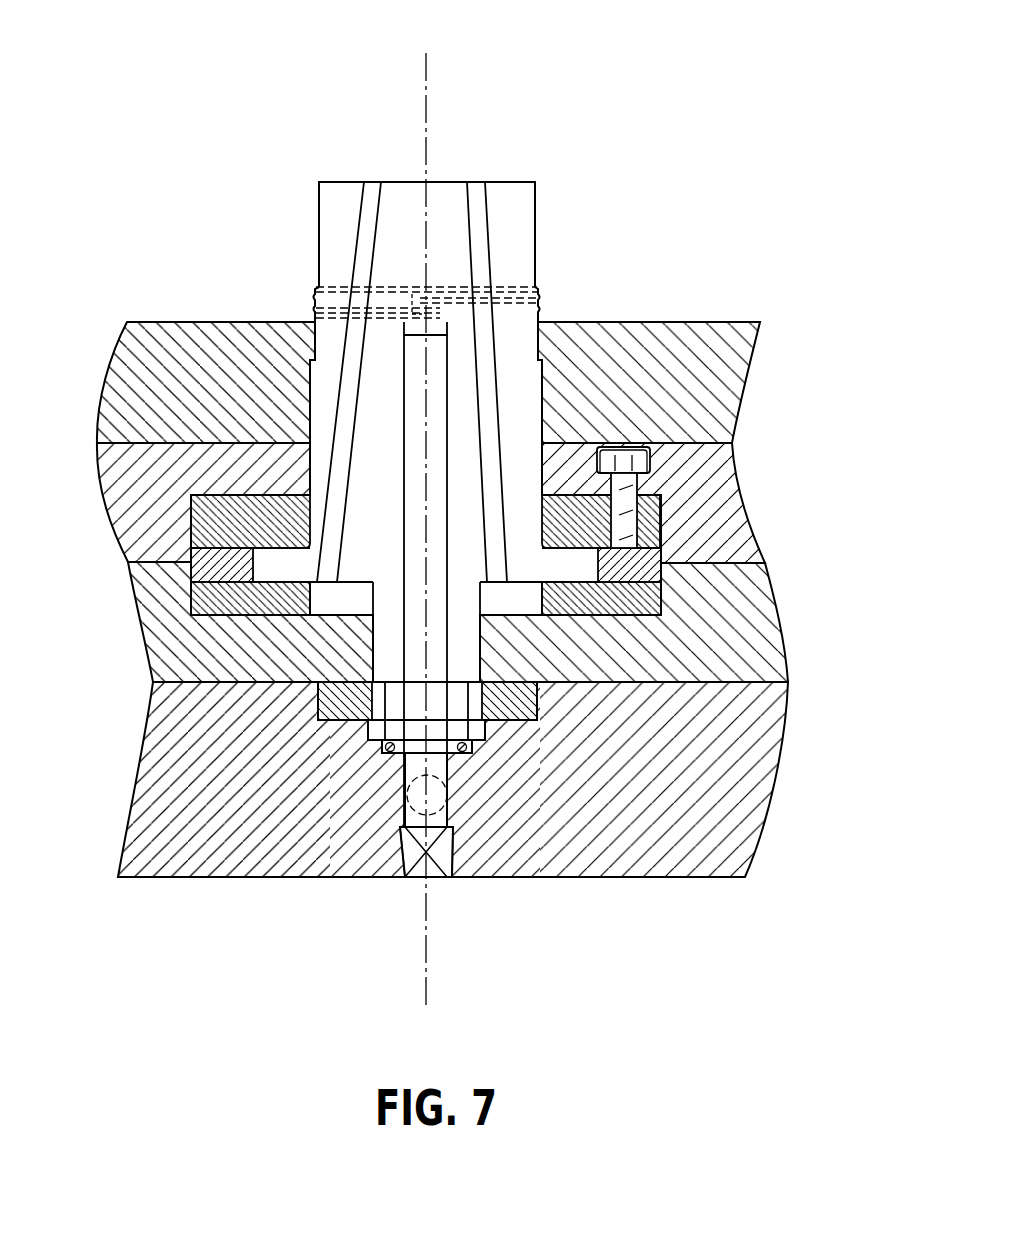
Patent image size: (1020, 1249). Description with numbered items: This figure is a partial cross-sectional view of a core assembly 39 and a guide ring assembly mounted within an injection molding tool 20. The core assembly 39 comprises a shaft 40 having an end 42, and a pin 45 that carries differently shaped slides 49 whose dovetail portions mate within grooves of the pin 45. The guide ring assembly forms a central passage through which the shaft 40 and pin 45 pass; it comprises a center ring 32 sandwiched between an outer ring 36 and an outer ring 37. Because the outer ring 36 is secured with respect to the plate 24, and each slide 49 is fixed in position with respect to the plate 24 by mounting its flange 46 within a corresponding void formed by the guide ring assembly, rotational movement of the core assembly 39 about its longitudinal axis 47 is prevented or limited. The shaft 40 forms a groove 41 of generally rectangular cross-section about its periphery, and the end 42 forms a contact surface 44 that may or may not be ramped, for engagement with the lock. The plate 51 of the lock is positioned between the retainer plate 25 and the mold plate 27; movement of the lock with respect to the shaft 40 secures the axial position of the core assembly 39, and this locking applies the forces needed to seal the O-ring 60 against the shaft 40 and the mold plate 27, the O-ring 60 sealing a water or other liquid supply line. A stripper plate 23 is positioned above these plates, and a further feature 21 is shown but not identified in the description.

The injection molding tool 20 is at (730, 145).
The mold 21 is at (715, 322).
The stripper plate 23 is at (705, 390).
The plate 24 is at (728, 508).
The retainer plate 25 is at (725, 638).
The mold plate 27 is at (730, 780).
The center ring 32 is at (215, 567).
The outer ring 36 is at (212, 515).
The outer ring 37 is at (207, 598).
The core assembly 39 is at (520, 168).
The shaft 40 is at (383, 643).
The groove 41 is at (382, 700).
The end 42 is at (476, 712).
The contact surface 44 is at (525, 707).
The pin 45 is at (397, 180).
The flange 46 is at (277, 560).
The longitudinal axis 47 is at (427, 110).
The slides 49 is at (365, 207).
The plate 51 is at (528, 712).
The O-ring 60 is at (390, 757).